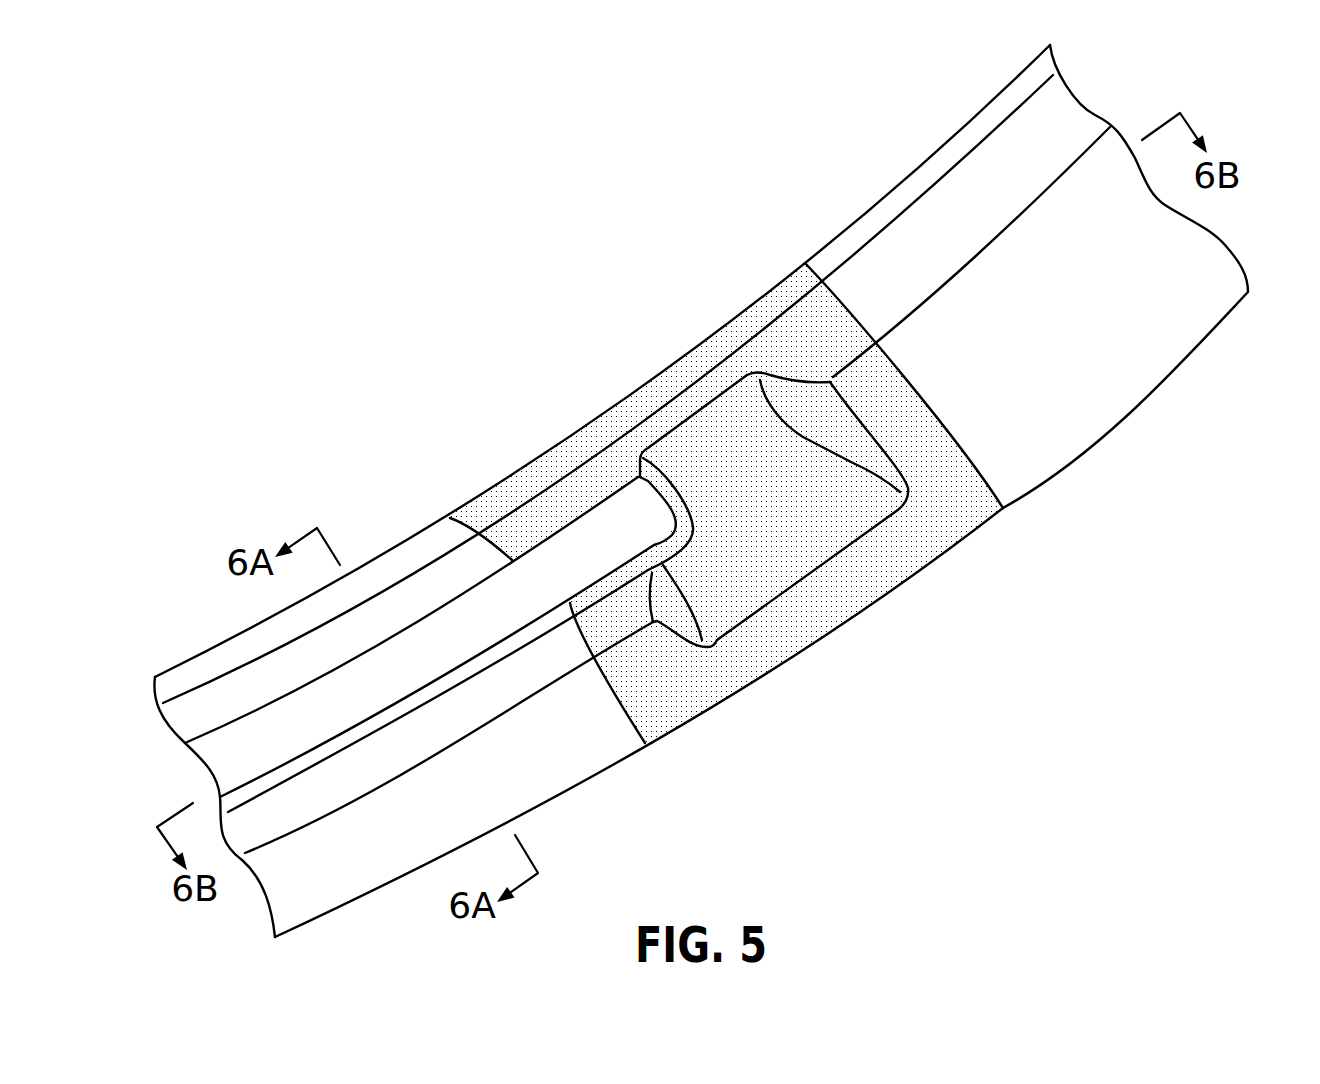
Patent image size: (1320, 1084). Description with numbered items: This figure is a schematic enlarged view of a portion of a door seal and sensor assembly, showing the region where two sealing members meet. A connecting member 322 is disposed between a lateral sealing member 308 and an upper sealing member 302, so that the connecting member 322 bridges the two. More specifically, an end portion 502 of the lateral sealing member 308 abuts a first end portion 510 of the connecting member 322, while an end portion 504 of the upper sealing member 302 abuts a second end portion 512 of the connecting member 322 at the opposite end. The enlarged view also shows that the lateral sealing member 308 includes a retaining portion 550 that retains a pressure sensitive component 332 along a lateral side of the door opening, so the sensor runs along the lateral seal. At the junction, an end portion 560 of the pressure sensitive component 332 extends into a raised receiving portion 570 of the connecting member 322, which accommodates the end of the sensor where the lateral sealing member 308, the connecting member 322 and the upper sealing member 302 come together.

The upper sealing member 302 is at (937, 170).
The lateral sealing member 308 is at (417, 593).
The connecting member 322 is at (707, 358).
The pressure sensitive component 332 is at (252, 745).
The end portion of lateral sealing member 502 is at (617, 743).
The end portion of upper sealing member 504 is at (1010, 490).
The first end portion of connecting member 510 is at (653, 720).
The second end portion of connecting member 512 is at (973, 513).
The retaining portion 550 is at (387, 727).
The end portion of pressure sensitive component 560 is at (638, 505).
The raised receiving portion 570 is at (695, 442).